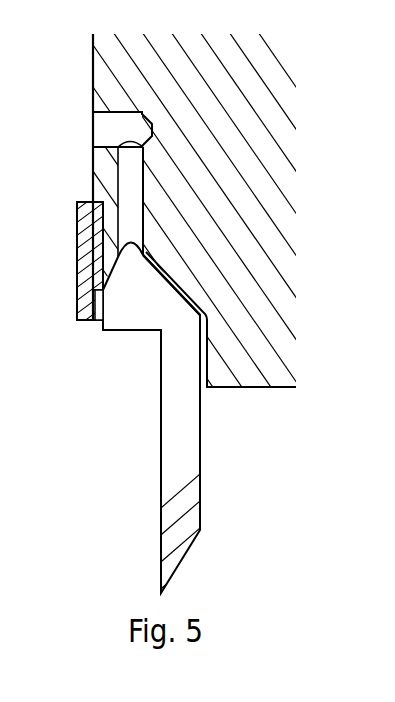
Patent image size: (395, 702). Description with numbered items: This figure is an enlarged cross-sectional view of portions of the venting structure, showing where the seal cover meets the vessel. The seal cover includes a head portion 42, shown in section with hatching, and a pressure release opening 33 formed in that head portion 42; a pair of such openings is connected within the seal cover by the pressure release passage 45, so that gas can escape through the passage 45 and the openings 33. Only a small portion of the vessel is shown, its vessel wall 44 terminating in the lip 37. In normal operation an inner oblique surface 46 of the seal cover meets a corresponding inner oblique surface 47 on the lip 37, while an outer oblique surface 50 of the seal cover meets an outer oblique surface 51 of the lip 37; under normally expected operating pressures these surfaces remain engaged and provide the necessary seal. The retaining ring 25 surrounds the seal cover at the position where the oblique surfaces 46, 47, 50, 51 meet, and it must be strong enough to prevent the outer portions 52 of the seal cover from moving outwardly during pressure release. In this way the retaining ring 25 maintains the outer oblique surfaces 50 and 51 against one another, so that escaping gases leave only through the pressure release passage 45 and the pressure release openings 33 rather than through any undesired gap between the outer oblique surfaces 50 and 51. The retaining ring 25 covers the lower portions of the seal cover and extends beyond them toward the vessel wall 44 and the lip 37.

The retaining ring 25 is at (97, 310).
The pressure release opening 33 is at (107, 136).
The lip 37 is at (148, 333).
The head portion 42 is at (258, 120).
The vessel wall 44 is at (182, 422).
The pressure release passage 45 is at (122, 250).
The inner oblique surface 46 is at (183, 284).
The inner oblique surface 47 is at (183, 305).
The outer oblique surface 50 is at (105, 263).
The outer oblique surface 51 is at (108, 323).
The outer portions 52 is at (103, 246).